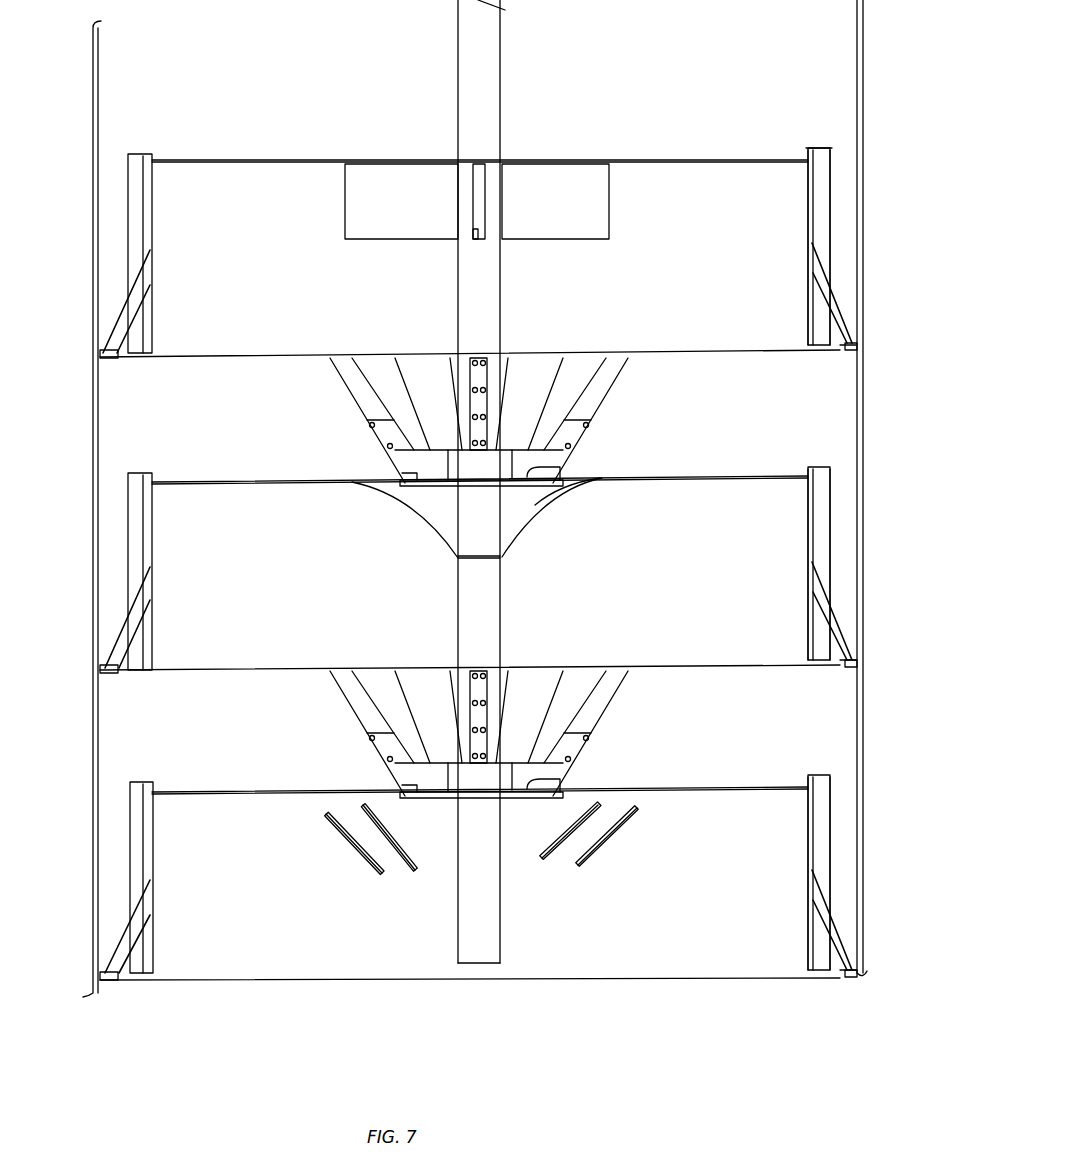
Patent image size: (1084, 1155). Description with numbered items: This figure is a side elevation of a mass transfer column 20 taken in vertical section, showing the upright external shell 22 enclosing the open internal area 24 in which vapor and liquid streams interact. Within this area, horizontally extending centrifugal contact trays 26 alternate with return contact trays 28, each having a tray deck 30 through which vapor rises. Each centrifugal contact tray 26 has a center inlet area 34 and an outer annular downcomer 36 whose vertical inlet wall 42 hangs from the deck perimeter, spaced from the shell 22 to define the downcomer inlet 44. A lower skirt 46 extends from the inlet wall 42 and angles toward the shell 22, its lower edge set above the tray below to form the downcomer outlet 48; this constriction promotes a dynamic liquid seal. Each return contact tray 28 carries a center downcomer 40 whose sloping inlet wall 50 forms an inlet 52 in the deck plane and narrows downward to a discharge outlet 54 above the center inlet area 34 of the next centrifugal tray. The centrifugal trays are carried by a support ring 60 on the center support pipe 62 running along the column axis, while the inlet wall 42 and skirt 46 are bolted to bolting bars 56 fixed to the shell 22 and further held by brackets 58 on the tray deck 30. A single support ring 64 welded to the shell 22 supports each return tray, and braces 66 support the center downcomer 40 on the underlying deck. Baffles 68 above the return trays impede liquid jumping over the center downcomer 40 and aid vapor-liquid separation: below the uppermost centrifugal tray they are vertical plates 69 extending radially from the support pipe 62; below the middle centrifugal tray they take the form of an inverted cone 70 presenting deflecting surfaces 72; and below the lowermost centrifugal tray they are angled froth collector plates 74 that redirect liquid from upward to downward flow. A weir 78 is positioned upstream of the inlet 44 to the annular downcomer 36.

The column 20 is at (871, 36).
The external shell 22 is at (855, 62).
The open internal area 24 is at (664, 50).
The centrifugal contact tray 26 is at (686, 156).
The return contact tray 28 is at (688, 350).
The tray deck 30 is at (745, 161).
The center inlet area 34 is at (563, 471).
The annular downcomer 36 is at (804, 227).
The center downcomer 40 is at (612, 394).
The inlet wall 42 is at (806, 181).
The inlet 44 is at (843, 156).
The lower skirt 46 is at (838, 295).
The downcomer outlet 48 is at (832, 355).
The inlet wall 50 is at (612, 372).
The inlet 52 is at (613, 349).
The discharge outlet 54 is at (421, 465).
The bolting bar 56 is at (818, 208).
The bracket 58 is at (858, 343).
The support ring 60 is at (422, 485).
The center support pipe 62 is at (497, 317).
The support ring 64 is at (852, 360).
The brace 66 is at (587, 436).
The baffle 68 is at (567, 248).
The vertical plate 69 is at (604, 202).
The inverted cone 70 is at (520, 545).
The deflecting surface 72 is at (568, 490).
The froth collector plate 74 is at (402, 840).
The weir 78 is at (808, 155).